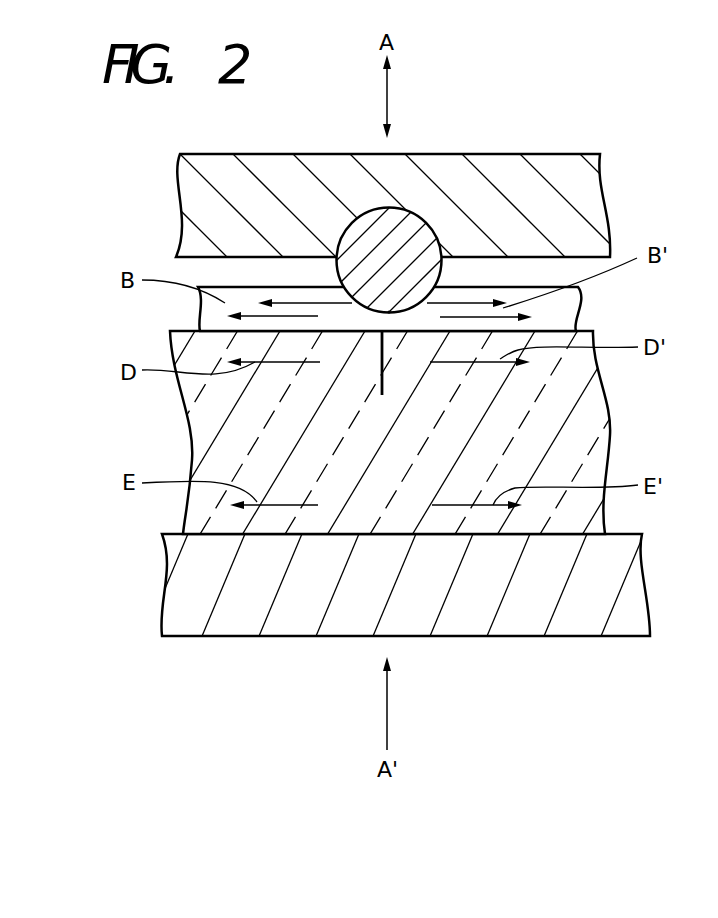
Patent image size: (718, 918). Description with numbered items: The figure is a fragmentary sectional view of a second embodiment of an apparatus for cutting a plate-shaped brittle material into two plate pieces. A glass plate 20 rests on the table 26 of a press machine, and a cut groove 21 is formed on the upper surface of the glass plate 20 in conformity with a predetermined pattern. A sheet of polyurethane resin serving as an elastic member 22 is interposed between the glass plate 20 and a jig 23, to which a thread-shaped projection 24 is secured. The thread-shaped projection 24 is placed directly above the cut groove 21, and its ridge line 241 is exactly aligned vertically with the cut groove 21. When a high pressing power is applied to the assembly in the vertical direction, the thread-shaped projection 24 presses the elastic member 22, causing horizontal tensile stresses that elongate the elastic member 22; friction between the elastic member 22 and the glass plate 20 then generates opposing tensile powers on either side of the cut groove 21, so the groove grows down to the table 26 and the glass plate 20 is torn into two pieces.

The glass plate 20 is at (580, 444).
The cut groove 21 is at (383, 382).
The elastic member 22 is at (573, 310).
The jig 23 is at (590, 194).
The thread-shaped projection 24 is at (414, 216).
The table 26 is at (625, 577).
The ridge line 241 is at (388, 313).